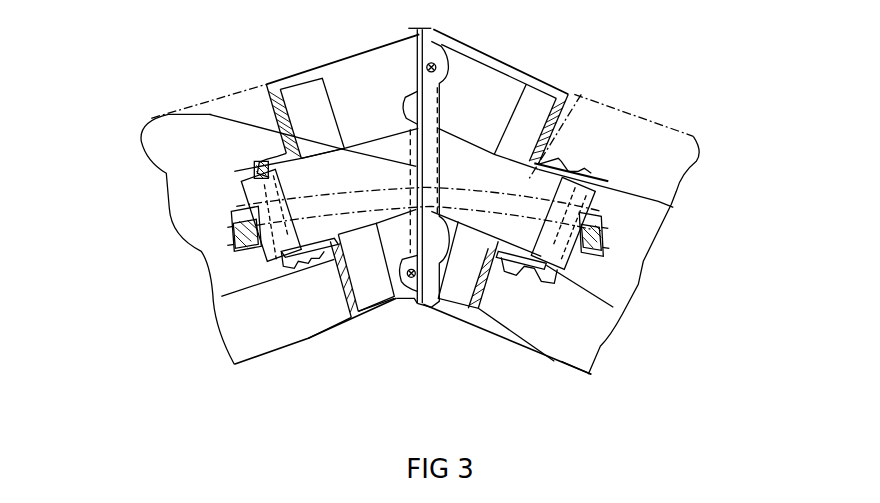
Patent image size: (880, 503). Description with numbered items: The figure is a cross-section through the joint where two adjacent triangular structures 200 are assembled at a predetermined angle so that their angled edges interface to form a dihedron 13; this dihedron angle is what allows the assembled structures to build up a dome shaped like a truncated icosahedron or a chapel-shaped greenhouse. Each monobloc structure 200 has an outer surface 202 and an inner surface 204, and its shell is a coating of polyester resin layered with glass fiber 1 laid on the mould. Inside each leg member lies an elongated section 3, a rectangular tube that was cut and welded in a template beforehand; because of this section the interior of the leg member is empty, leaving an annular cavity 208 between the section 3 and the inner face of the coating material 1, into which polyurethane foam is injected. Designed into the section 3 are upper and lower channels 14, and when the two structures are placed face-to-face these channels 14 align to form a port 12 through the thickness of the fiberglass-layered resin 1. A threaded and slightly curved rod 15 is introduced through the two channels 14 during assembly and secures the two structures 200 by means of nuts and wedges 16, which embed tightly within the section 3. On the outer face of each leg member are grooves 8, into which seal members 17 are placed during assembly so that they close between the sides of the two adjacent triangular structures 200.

The coating plastic material 1 is at (497, 62).
The elongated section 3 is at (527, 115).
The grooves 8 is at (425, 66).
The ports 12 is at (594, 170).
The dihedron 13 is at (438, 339).
The channels 14 is at (208, 113).
The threaded and slightly curved rod 15 is at (243, 226).
The nuts and wedges 16 is at (273, 258).
The seal members 17 is at (415, 272).
The triangular structure 200 is at (703, 405).
The outer surface 202 is at (338, 52).
The inner surface 204 is at (553, 360).
The annular cavity 208 is at (263, 333).